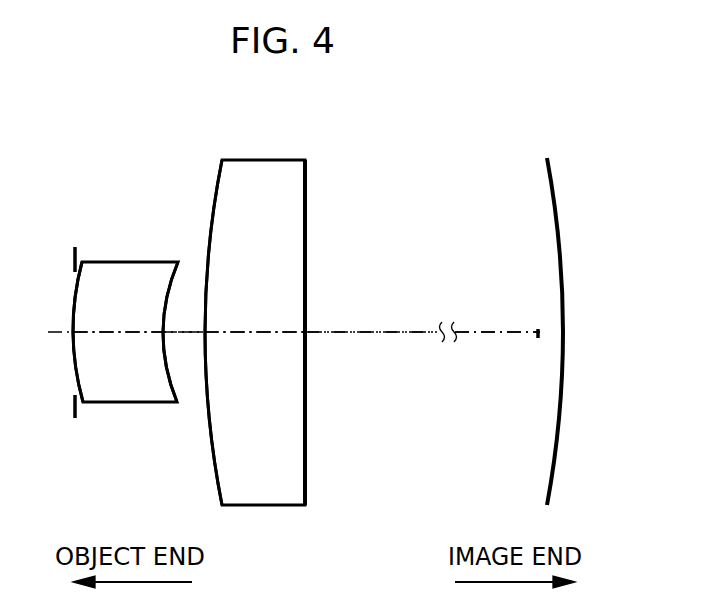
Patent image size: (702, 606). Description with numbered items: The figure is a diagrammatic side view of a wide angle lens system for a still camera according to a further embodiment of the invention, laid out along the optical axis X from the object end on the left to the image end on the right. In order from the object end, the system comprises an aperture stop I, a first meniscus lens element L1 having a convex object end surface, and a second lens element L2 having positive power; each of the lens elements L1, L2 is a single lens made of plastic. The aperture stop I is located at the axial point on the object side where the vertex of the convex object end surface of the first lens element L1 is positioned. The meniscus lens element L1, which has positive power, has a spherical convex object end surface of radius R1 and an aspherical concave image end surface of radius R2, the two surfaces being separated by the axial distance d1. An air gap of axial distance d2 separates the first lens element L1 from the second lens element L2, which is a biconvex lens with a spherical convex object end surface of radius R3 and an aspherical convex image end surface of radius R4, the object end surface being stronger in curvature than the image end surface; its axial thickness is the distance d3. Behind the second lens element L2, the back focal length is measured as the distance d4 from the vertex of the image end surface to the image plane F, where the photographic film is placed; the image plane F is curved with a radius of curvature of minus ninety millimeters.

The aperture stop I is at (72, 248).
The first meniscus lens element L1 is at (124, 262).
The second lens element L2 is at (258, 160).
The first lens surface radius R1 is at (73, 368).
The second lens surface radius R2 is at (176, 388).
The third lens surface radius R3 is at (212, 458).
The fourth lens surface radius R4 is at (306, 447).
The first axial distance d1 is at (93, 330).
The second axial distance d2 is at (170, 330).
The third axial distance d3 is at (282, 331).
The back focal length distance d4 is at (462, 332).
The image plane F is at (545, 167).
The optical axis X is at (537, 342).